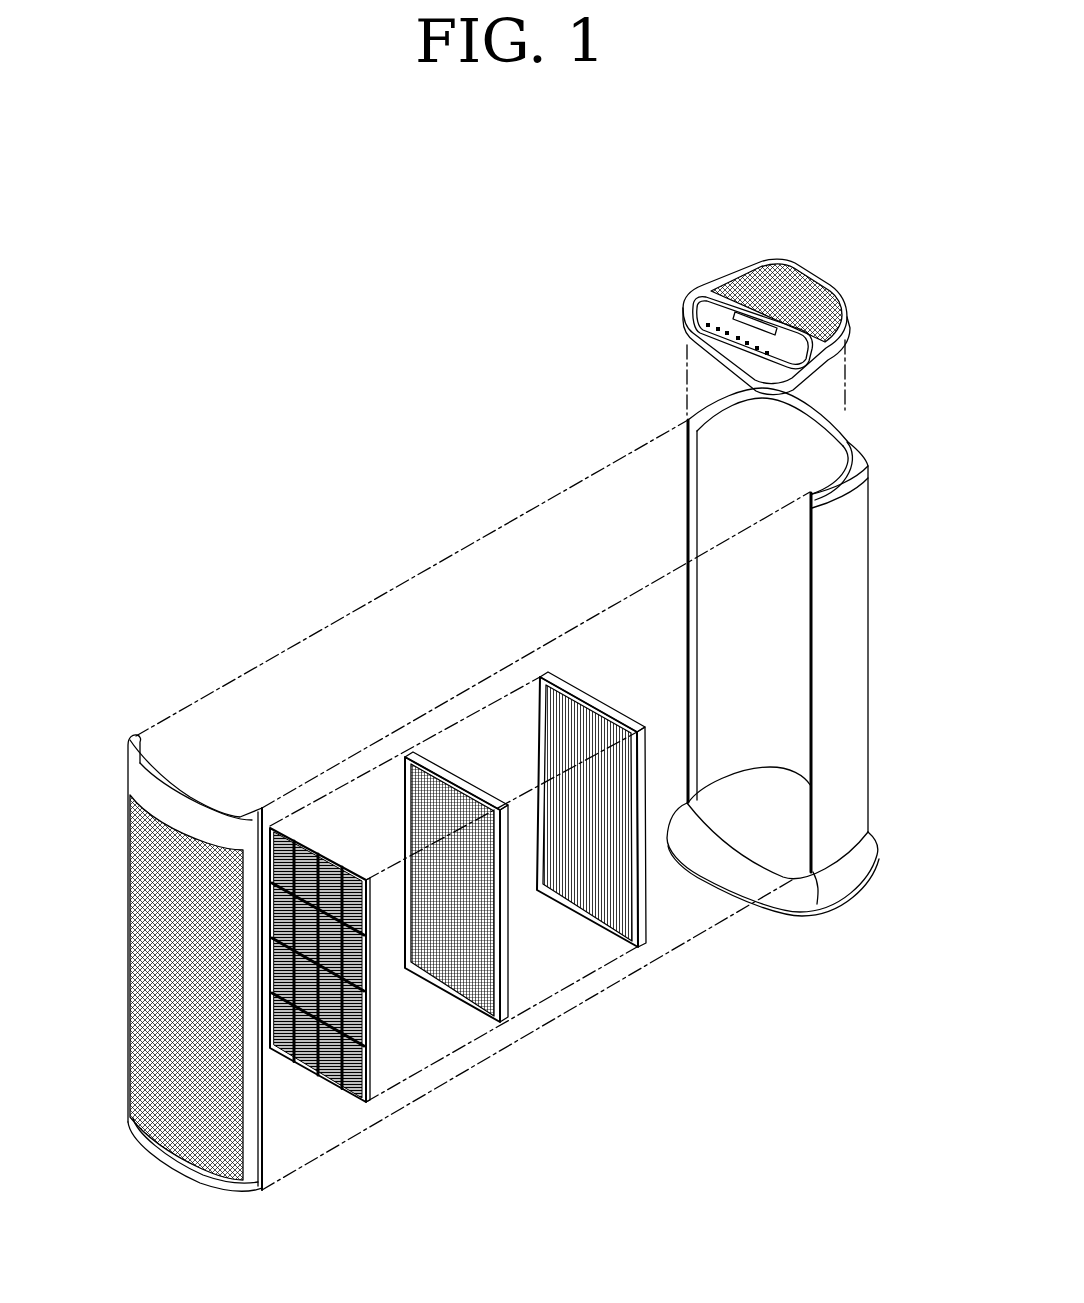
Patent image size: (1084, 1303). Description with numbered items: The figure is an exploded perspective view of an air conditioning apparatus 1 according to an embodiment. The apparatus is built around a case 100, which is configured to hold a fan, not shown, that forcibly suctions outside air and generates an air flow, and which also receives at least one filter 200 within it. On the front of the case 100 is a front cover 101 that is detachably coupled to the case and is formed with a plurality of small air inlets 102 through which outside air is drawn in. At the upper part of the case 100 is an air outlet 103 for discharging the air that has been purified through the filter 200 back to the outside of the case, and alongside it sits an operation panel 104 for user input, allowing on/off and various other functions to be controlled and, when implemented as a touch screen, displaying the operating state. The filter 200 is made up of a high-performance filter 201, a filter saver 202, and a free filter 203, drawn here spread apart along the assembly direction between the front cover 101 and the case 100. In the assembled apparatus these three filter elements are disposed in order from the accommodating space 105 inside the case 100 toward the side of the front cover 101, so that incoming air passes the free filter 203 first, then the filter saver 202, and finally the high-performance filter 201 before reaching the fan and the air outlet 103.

The air conditioning apparatus 1 is at (601, 246).
The case 100 is at (870, 521).
The front cover 101 is at (128, 773).
The air inlets 102 is at (136, 1045).
The air outlet 103 is at (810, 294).
The operation panel 104 is at (707, 308).
The accommodating space 105 is at (797, 687).
The filter 200 is at (710, 1013).
The high-performance filter 201 is at (637, 947).
The filter saver 202 is at (503, 1023).
The free filter 203 is at (367, 1102).